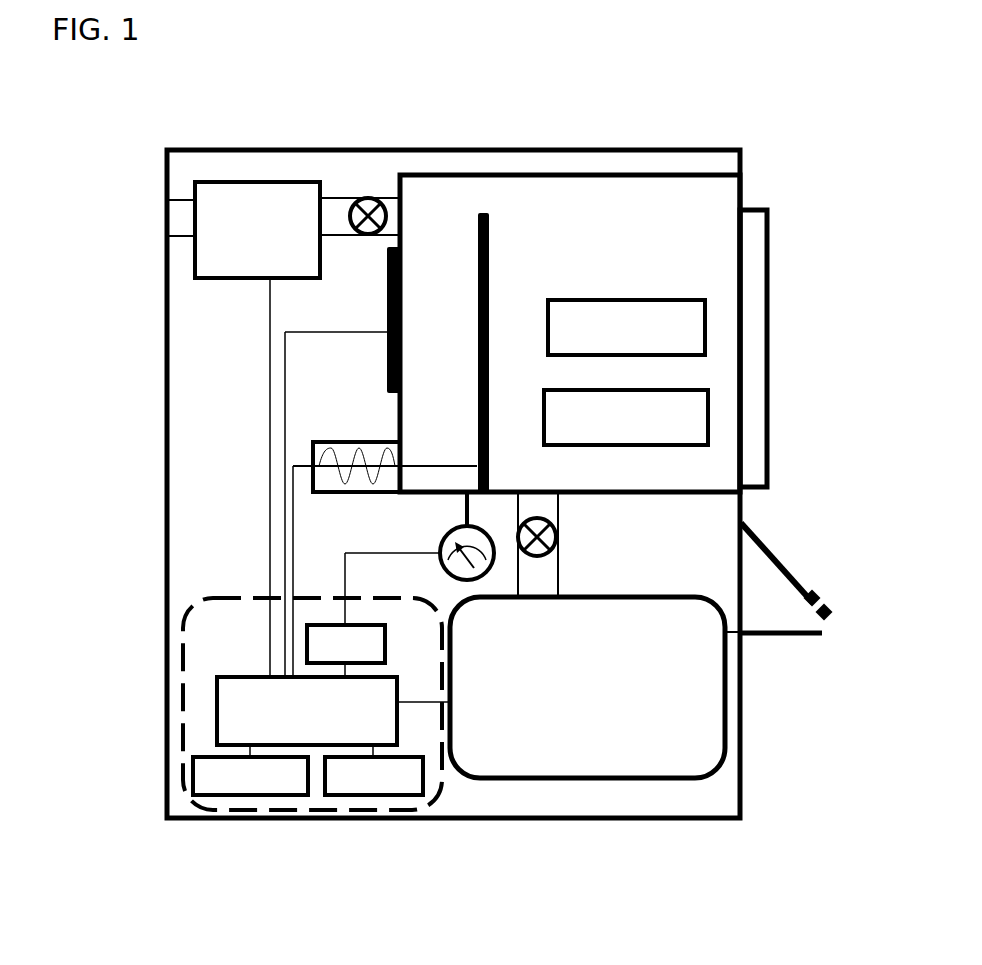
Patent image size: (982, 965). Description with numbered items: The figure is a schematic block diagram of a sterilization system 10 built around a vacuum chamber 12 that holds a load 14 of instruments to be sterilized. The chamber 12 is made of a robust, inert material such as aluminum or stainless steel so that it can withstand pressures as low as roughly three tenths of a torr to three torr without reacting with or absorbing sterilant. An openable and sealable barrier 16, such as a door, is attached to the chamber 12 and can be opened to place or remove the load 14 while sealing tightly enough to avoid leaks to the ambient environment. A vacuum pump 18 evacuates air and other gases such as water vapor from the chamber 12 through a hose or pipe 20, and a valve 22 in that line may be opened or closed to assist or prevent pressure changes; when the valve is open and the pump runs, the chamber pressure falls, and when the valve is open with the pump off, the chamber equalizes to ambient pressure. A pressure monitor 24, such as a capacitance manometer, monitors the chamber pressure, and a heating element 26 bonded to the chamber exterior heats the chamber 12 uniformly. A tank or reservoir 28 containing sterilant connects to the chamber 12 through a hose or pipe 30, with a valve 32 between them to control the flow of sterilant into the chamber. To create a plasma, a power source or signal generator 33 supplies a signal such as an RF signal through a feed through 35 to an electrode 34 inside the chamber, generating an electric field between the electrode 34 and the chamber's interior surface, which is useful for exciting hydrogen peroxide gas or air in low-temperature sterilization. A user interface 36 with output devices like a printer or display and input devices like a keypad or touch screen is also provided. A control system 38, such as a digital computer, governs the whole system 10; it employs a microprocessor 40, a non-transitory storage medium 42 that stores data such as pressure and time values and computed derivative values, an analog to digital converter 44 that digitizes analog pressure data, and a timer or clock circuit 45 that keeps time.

The sterilization system 10 is at (110, 205).
The vacuum chamber 12 is at (656, 172).
The load 14 is at (670, 355).
The openable and sealable barrier 16 is at (768, 252).
The vacuum pump 18 is at (245, 182).
The hose or pipe 20 is at (328, 197).
The valve 22 is at (368, 198).
The pressure monitor 24 is at (440, 545).
The heating element 26 is at (387, 283).
The tank or reservoir 28 is at (553, 778).
The hose or pipe 30 is at (560, 504).
The valve 32 is at (560, 537).
The power source and/or signal generator 33 is at (333, 442).
The electrode 34 is at (489, 255).
The feed through 35 is at (455, 466).
The user interface 36 is at (780, 570).
The control system 38 is at (197, 800).
The microprocessor 40 is at (215, 710).
The non-transitory storage medium 42 is at (264, 797).
The analog to digital converter 44 is at (333, 625).
The timer or clock circuit 45 is at (385, 797).